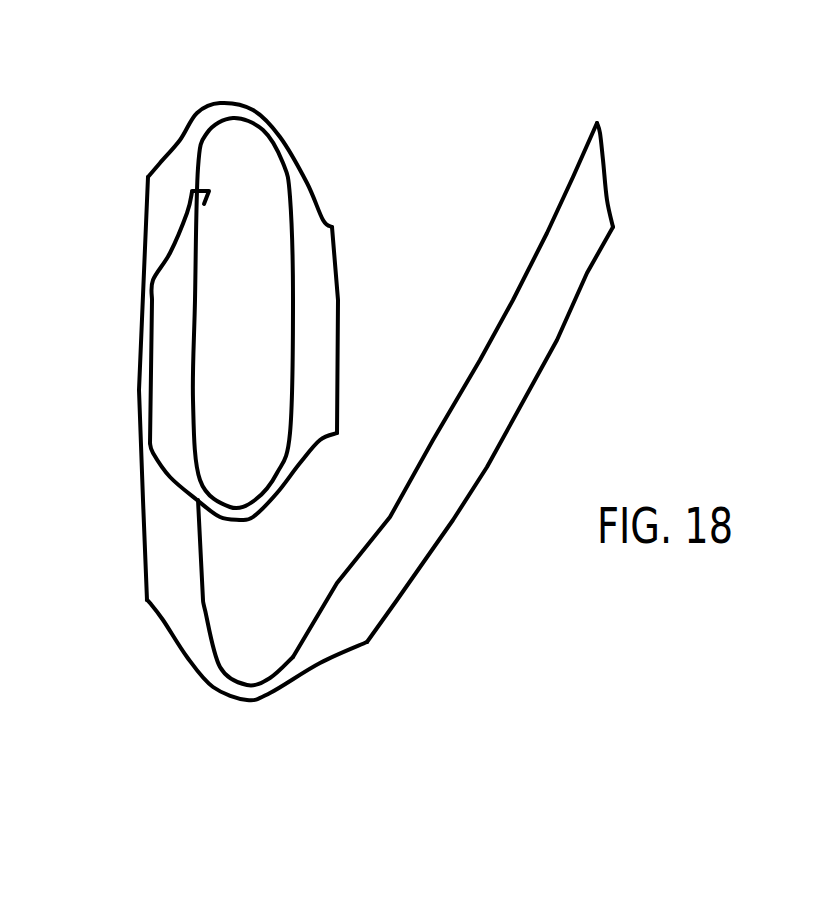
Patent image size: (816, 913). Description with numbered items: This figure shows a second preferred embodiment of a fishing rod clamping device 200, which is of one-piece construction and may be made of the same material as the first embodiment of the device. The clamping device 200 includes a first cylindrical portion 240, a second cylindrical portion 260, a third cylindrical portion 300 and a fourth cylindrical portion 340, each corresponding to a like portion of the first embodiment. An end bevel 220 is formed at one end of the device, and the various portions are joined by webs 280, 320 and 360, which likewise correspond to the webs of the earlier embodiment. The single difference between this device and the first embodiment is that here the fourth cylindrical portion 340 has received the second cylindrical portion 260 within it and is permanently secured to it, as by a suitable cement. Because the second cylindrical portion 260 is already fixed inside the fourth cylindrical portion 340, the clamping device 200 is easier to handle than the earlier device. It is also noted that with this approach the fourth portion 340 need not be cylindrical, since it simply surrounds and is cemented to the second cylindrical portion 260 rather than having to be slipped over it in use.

The fishing rod clamping device 200 is at (521, 207).
The end bevel 220 is at (587, 185).
The first cylindrical portion 240 is at (447, 475).
The second cylindrical portion 260 is at (163, 230).
The web 280 is at (260, 693).
The third cylindrical portion 300 is at (340, 303).
The web 320 is at (220, 107).
The fourth cylindrical portion 340 is at (165, 365).
The web 360 is at (260, 513).